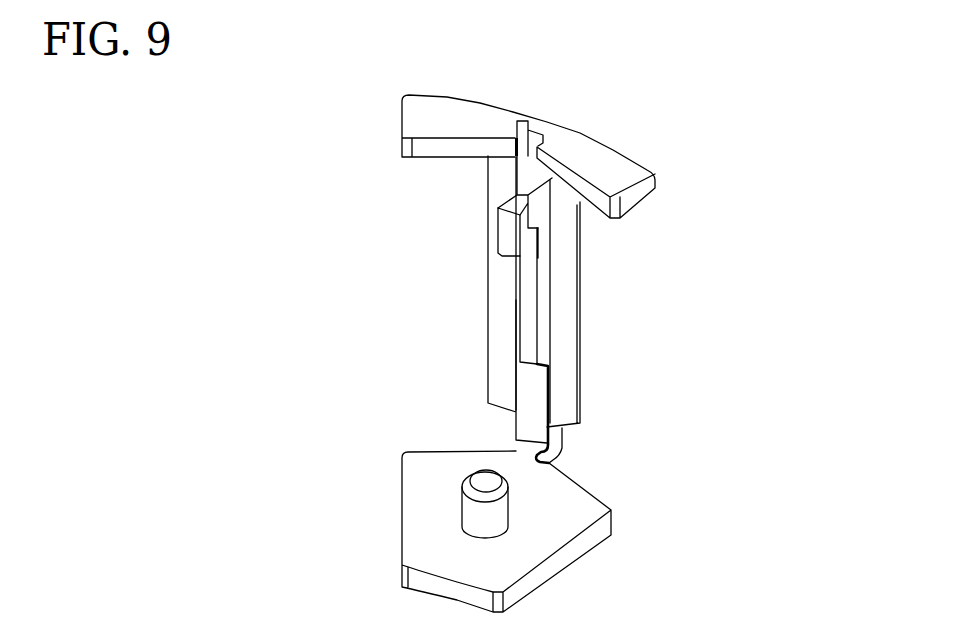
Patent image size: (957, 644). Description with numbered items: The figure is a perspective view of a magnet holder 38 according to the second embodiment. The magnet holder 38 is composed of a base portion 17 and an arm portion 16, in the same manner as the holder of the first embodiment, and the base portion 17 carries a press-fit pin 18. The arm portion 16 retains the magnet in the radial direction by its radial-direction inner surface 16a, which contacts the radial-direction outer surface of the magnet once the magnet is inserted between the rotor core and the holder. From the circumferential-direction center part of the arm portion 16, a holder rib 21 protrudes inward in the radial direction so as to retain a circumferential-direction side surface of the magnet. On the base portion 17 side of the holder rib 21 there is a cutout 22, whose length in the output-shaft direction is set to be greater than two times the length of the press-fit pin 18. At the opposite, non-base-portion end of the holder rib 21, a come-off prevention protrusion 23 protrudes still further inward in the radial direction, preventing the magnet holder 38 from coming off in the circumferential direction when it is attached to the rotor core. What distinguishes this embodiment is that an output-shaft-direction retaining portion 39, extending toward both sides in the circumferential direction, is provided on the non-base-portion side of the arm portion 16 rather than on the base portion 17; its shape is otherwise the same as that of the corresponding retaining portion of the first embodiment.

The magnet holder 38 is at (544, 273).
The output-shaft-direction retaining portion 39 is at (455, 127).
The arm portion 16 is at (502, 295).
The radial-direction inner surface 16a is at (502, 355).
The come-off prevention protrusion 23 is at (507, 242).
The holder rib 21 is at (525, 340).
The cutout 22 is at (535, 415).
The base portion 17 is at (590, 510).
The press-fit pin 18 is at (480, 498).